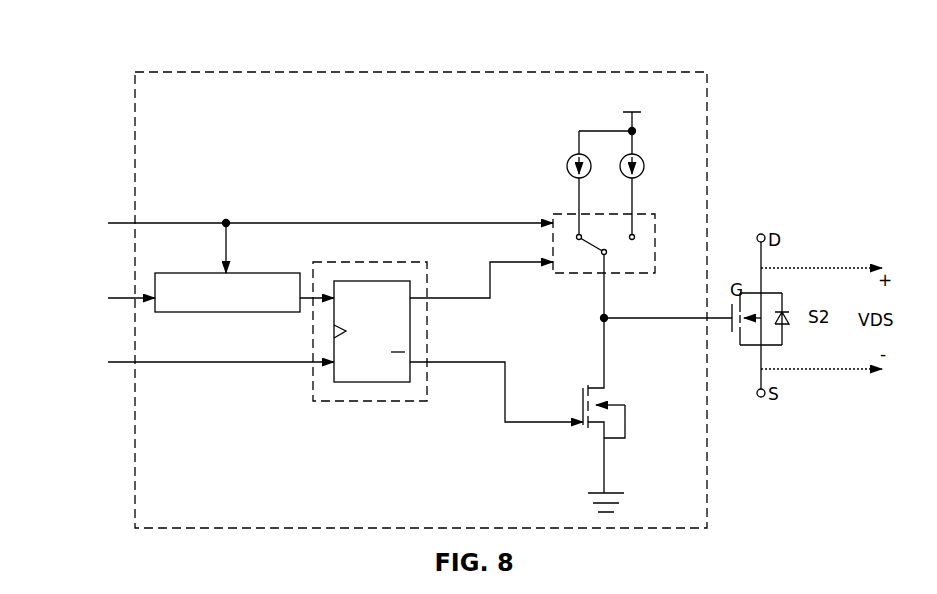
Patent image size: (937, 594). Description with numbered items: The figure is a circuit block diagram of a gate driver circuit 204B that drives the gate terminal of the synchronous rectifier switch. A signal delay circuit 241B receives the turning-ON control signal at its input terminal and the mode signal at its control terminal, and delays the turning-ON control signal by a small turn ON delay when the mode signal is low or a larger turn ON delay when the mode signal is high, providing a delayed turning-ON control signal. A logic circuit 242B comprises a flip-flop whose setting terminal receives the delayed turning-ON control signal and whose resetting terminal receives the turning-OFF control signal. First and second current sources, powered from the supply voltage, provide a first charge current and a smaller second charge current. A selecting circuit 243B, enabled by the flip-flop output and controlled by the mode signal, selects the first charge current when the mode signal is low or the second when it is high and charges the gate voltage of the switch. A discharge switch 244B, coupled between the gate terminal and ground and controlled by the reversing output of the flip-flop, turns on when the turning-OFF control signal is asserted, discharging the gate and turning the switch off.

The gate driver circuit 204B is at (301, 66).
The signal delay circuit 241B is at (207, 313).
The logic circuit 242B is at (330, 402).
The selecting circuit 243B is at (578, 274).
The discharge switch 244B is at (580, 434).